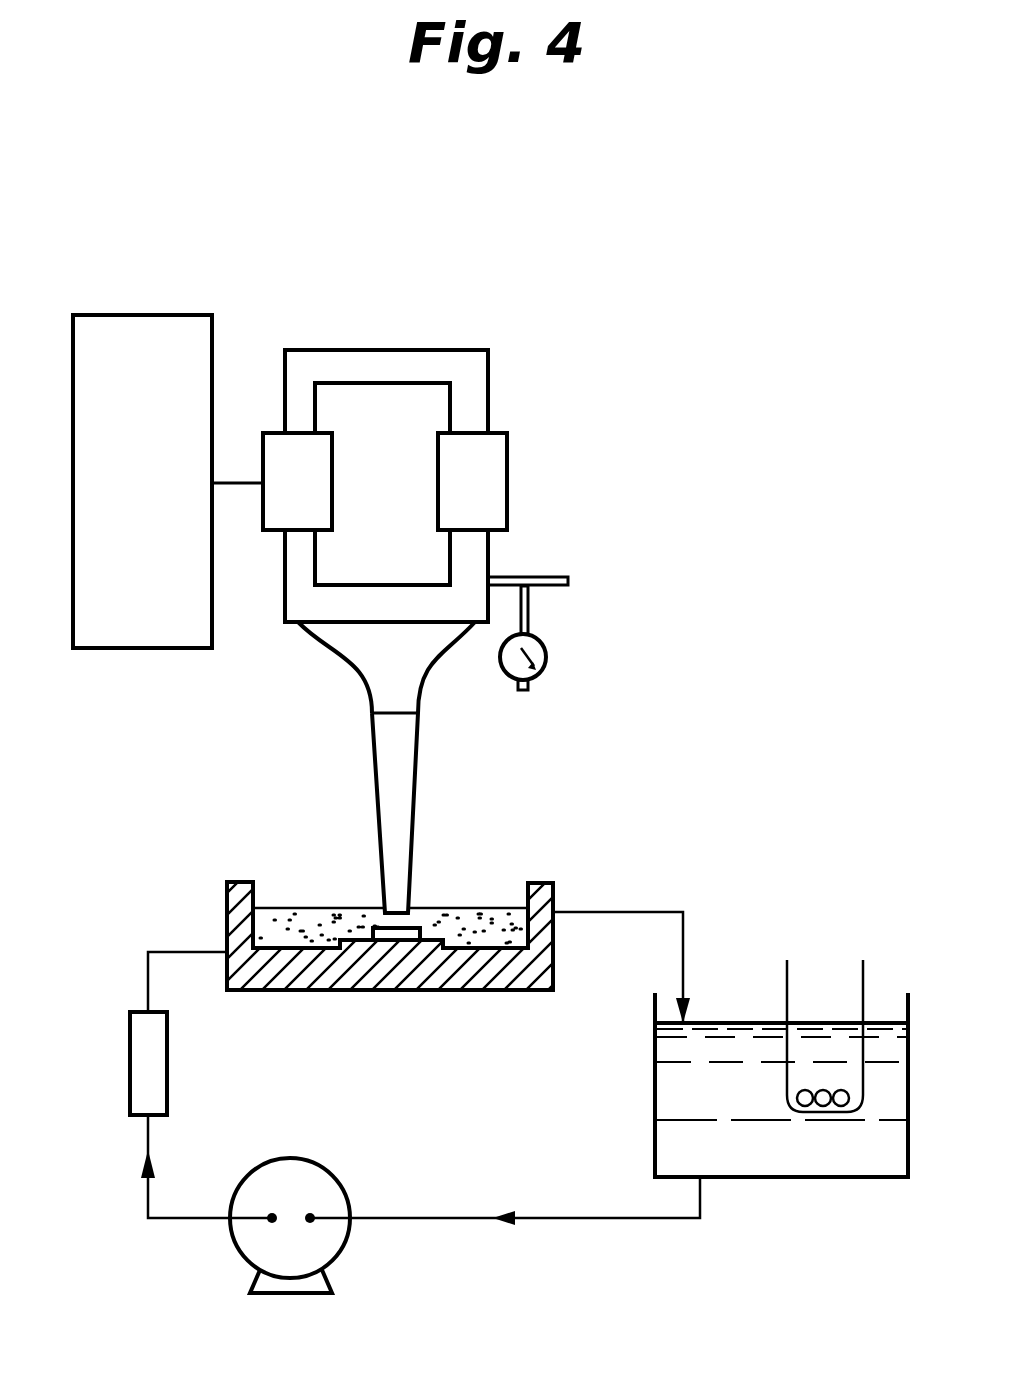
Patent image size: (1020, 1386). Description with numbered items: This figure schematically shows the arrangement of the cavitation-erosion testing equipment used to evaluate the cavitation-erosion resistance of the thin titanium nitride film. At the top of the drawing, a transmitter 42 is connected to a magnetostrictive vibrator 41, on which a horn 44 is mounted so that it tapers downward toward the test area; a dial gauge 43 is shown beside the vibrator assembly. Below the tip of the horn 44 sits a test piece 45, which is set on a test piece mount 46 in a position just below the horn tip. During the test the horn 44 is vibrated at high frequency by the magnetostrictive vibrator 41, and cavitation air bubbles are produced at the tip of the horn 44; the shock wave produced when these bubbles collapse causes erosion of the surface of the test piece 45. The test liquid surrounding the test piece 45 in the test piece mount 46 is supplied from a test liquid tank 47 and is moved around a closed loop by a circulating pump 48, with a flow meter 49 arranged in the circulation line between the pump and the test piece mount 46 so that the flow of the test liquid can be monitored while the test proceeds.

The magnetostrictive vibrator 41 is at (445, 350).
The transmitter 42 is at (150, 315).
The dial gauge 43 is at (548, 650).
The horn 44 is at (373, 802).
The test piece 45 is at (418, 918).
The test piece mount 46 is at (226, 915).
The test liquid tank 47 is at (655, 1092).
The circulating pump 48 is at (325, 1172).
The flow meter 49 is at (128, 1072).